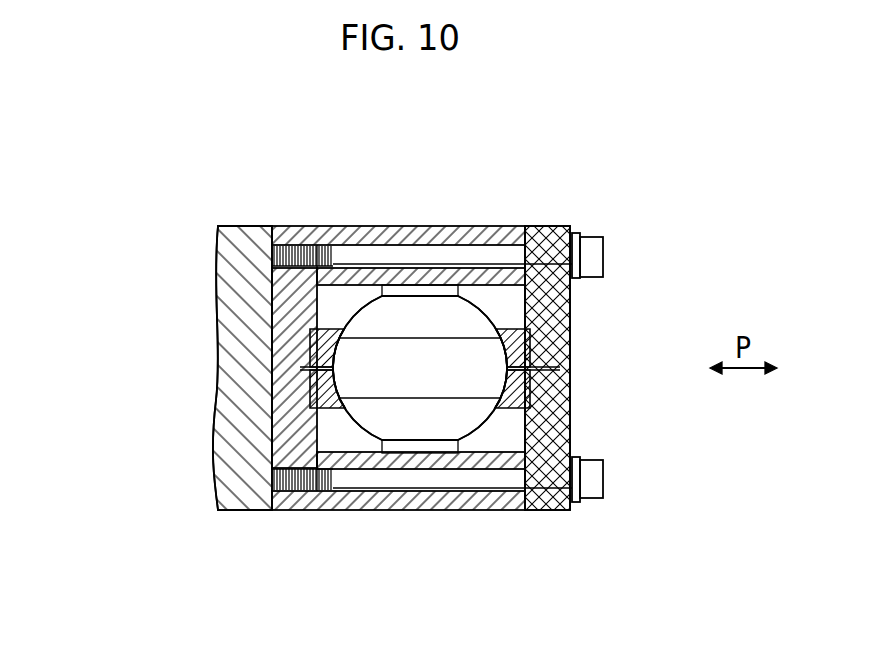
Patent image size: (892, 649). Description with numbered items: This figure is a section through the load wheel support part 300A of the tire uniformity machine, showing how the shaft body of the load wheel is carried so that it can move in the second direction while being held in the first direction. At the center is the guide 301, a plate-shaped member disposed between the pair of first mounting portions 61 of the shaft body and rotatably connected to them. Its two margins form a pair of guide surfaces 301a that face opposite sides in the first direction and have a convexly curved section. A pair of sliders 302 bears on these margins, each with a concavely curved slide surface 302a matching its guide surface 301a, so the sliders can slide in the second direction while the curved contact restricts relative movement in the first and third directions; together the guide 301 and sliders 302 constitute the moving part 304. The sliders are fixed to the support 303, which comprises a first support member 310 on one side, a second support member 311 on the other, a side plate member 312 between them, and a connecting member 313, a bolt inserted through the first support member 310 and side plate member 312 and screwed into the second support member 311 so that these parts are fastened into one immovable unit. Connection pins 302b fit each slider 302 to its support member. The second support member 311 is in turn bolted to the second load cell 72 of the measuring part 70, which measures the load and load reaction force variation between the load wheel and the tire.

The load wheel support part 300A is at (257, 213).
The second load cell 72 is at (238, 507).
The measuring part 70 is at (242, 368).
The second support member 311 is at (300, 227).
The side plate member 312 is at (495, 235).
The first support member 310 is at (545, 232).
The support 303 is at (547, 505).
The connecting member 313 is at (428, 248).
The first mounting portion 61 is at (365, 320).
The guide 301 is at (418, 357).
The moving part 304 is at (420, 368).
The guide surface 301a is at (328, 335).
The slider 302 is at (523, 400).
The slide surface 302a is at (507, 357).
The connection pin 302b is at (535, 365).